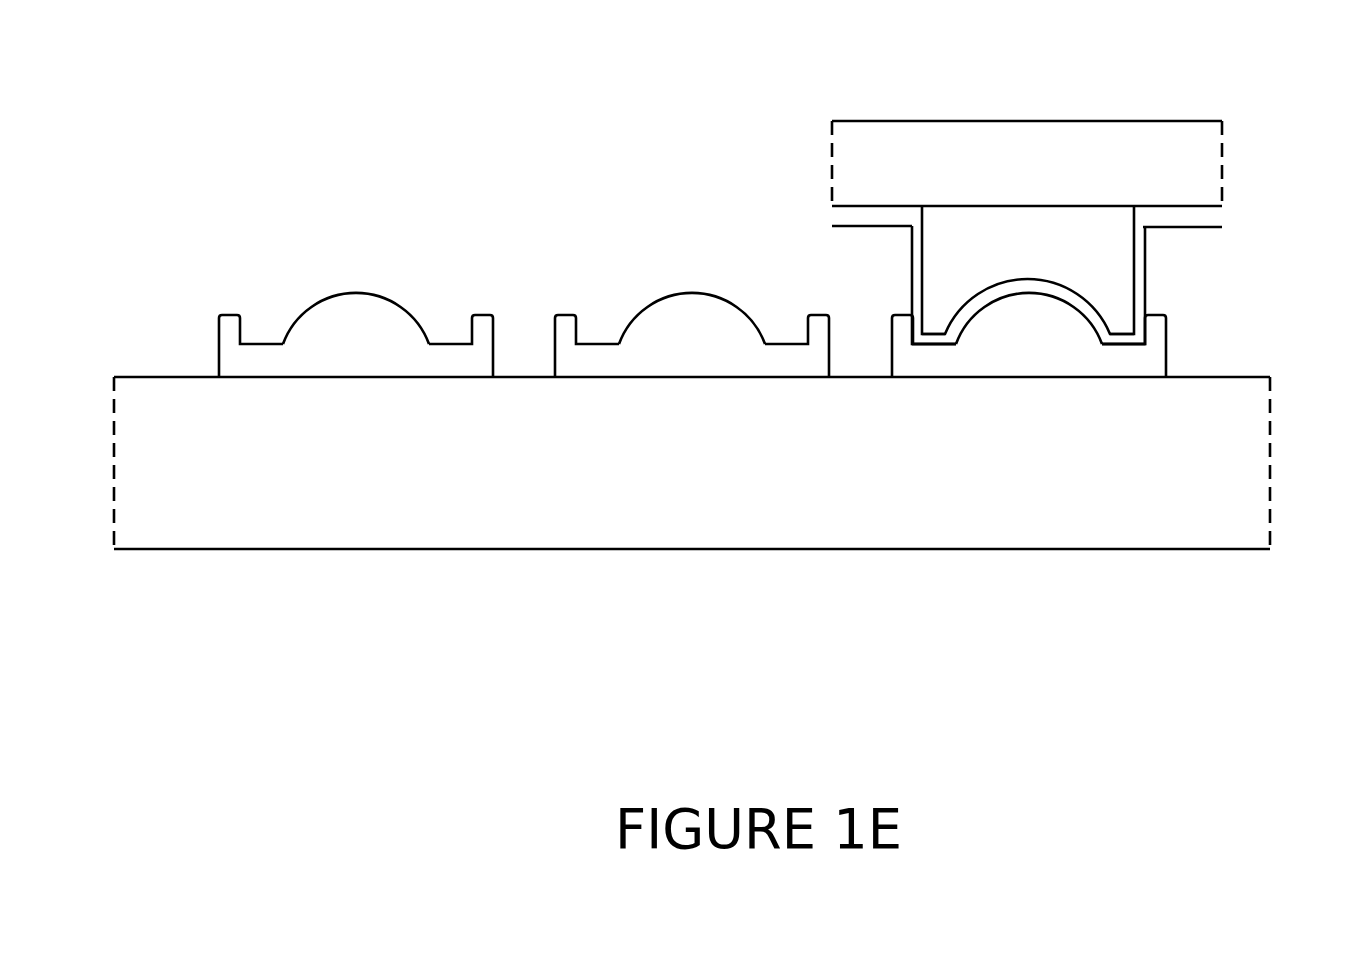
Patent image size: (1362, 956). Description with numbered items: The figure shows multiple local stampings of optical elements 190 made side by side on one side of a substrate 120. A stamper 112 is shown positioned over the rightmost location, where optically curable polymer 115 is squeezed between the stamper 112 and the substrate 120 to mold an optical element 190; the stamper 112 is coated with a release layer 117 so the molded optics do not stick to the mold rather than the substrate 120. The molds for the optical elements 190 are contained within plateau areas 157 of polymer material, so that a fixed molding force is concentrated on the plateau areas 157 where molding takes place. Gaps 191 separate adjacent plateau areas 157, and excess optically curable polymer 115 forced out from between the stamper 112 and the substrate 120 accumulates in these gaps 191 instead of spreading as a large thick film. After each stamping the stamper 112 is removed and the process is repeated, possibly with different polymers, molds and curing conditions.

The stamper 112 is at (997, 133).
The optically curable polymer 115 is at (950, 249).
The release layer 117 is at (1208, 218).
The substrate 120 is at (448, 528).
The plateau area 157 is at (937, 335).
The optical element 190 is at (357, 291).
The gap 191 is at (523, 322).